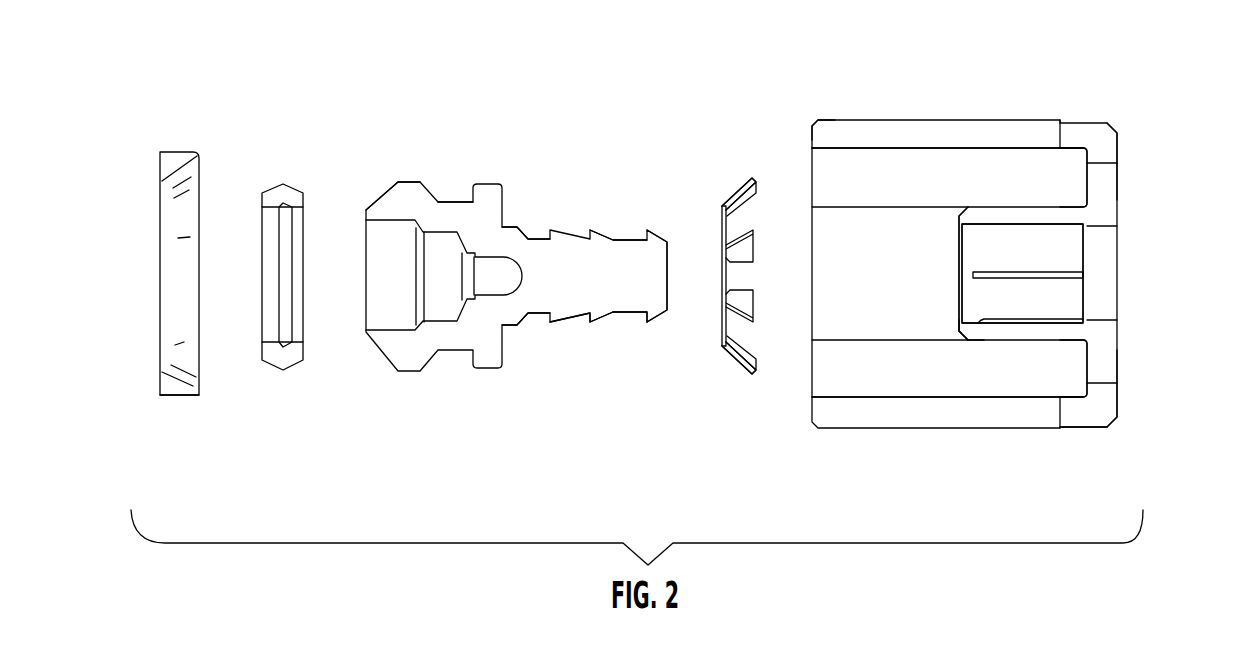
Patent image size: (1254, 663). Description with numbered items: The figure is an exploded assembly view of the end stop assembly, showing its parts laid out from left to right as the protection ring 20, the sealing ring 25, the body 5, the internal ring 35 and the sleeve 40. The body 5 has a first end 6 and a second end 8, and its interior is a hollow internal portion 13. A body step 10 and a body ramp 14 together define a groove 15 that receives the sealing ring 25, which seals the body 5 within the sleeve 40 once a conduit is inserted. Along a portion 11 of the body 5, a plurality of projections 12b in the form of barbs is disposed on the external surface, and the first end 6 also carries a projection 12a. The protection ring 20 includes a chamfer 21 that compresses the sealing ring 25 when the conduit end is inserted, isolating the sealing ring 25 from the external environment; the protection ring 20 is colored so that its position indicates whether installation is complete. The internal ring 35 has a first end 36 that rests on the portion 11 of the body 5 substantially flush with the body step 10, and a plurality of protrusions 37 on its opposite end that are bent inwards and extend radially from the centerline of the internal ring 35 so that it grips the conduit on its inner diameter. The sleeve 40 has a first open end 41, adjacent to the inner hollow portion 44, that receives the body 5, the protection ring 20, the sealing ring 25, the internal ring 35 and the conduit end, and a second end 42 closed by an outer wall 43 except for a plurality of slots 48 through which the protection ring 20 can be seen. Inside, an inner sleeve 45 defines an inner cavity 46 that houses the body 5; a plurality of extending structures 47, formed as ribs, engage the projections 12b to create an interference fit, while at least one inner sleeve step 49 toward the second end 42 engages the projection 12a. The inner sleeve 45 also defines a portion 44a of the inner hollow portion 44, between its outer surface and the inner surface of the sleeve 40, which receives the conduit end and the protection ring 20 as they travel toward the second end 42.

The body 5 is at (530, 290).
The first end 6 is at (663, 238).
The second end 8 is at (365, 336).
The body step 10 is at (492, 190).
The portion 11 is at (613, 243).
The projection 12a is at (660, 318).
The projections 12b is at (597, 323).
The hollow internal portion 13 is at (449, 310).
The body ramp 14 is at (374, 204).
The groove 15 is at (457, 198).
The protection ring 20 is at (178, 158).
The chamfer 21 is at (183, 388).
The sealing ring 25 is at (278, 190).
The internal ring 35 is at (752, 187).
The first end 36 is at (730, 200).
The protrusions 37 is at (750, 373).
The sleeve 40 is at (900, 125).
The first open end 41 is at (815, 120).
The second end 42 is at (1117, 185).
The outer wall 43 is at (1117, 373).
The inner hollow portion 44 is at (851, 389).
The portion of inner hollow portion 44a is at (1000, 160).
The inner sleeve 45 is at (963, 333).
The inner cavity 46 is at (966, 211).
The extending structures 47 is at (1035, 228).
The slots 48 is at (1087, 429).
The inner sleeve step 49 is at (1087, 317).